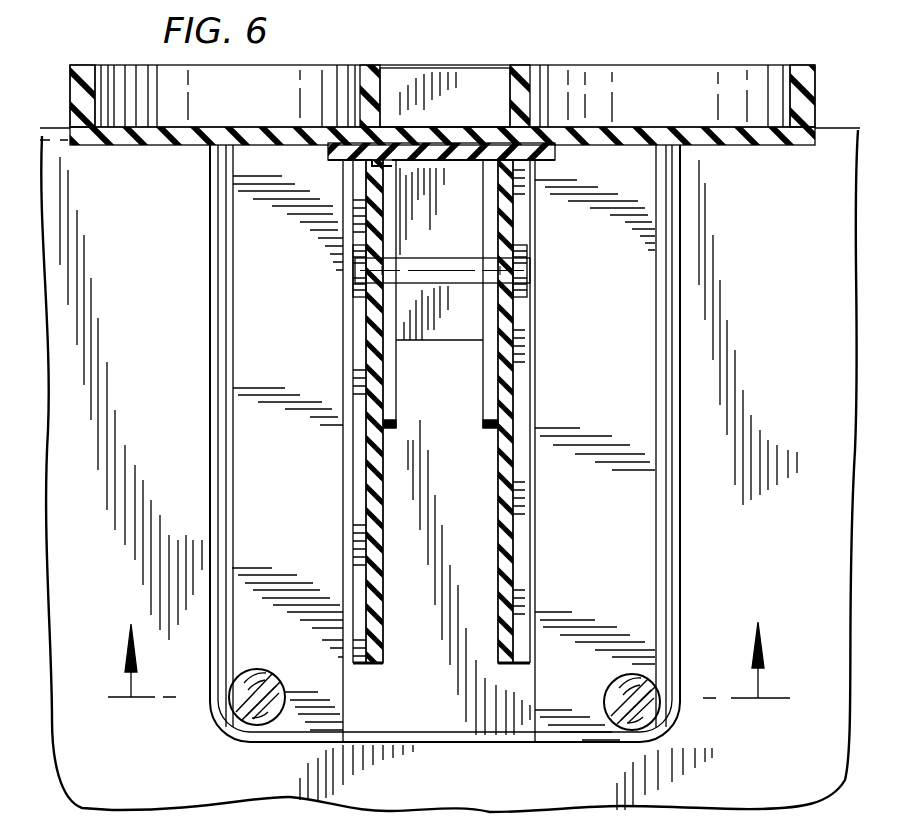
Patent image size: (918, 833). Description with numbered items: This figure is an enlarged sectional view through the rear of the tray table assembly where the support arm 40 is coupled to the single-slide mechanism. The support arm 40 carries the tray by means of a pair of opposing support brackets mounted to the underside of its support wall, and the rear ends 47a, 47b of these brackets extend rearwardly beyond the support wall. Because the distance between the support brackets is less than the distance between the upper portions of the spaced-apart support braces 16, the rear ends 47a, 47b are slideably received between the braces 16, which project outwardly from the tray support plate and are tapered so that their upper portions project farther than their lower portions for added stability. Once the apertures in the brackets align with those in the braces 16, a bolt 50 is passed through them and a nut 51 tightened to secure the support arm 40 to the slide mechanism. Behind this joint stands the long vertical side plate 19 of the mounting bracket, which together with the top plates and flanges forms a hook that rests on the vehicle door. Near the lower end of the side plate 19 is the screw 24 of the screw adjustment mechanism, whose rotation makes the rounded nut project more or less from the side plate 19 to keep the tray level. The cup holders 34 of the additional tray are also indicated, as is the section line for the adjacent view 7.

The cup holder 34 is at (328, 80).
The support arm 40 is at (446, 150).
The side plate 19 is at (312, 340).
The bolt 50 is at (433, 278).
The nut 51 is at (532, 290).
The rear end of support bracket 47a is at (367, 412).
The rear end of support bracket 47b is at (487, 424).
The support brace 16 is at (440, 411).
The screw 24 is at (255, 672).
The section line 7 is at (449, 646).